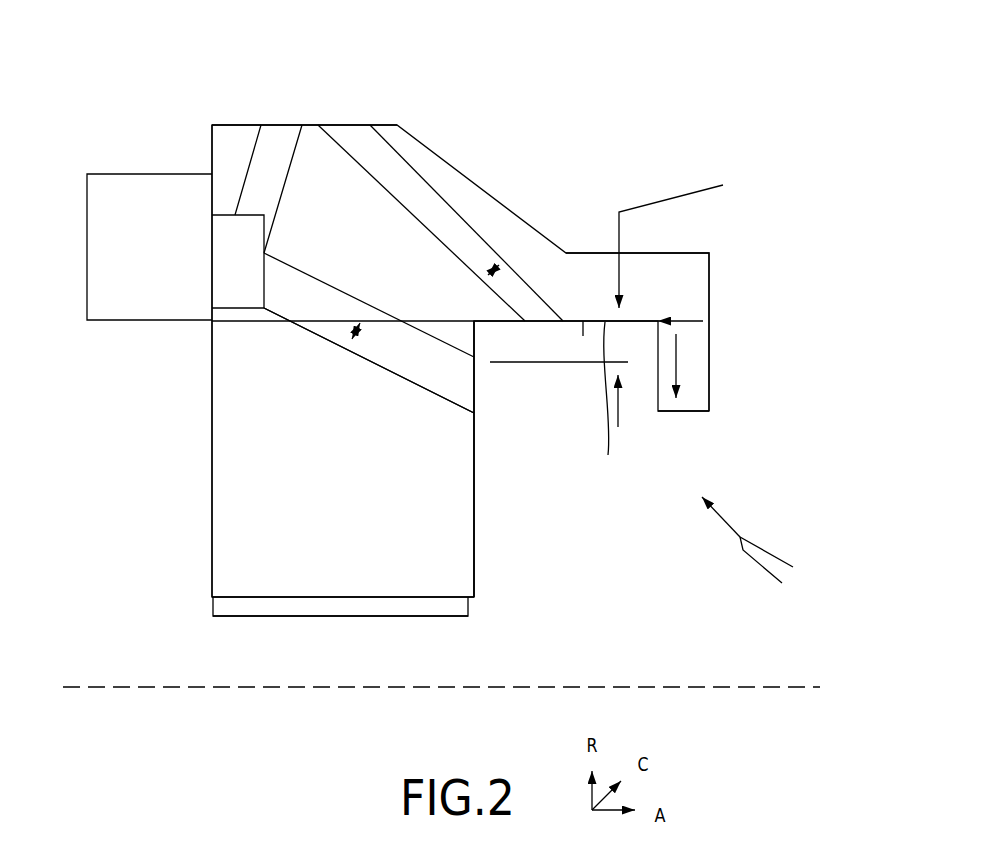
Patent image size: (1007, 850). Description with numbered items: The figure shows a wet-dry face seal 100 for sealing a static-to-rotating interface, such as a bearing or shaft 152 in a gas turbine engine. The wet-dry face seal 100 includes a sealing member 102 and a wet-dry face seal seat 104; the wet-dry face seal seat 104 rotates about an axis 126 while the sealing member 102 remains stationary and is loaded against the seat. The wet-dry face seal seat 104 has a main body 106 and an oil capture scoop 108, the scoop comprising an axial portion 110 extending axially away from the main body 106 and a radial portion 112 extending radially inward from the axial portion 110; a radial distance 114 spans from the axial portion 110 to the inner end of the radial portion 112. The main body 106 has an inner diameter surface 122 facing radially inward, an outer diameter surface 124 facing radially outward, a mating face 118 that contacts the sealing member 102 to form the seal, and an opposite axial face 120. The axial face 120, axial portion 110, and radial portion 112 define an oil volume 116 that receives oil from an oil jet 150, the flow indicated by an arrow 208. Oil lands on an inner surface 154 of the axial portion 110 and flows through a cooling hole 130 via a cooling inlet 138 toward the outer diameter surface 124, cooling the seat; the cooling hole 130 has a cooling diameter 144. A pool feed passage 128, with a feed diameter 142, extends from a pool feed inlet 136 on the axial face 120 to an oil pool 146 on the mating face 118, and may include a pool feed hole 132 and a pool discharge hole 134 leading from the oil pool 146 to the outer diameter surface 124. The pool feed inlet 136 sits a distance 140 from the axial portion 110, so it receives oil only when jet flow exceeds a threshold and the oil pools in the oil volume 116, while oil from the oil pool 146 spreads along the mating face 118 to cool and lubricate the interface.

The wet-dry face seal 100 is at (708, 126).
The sealing member 102 is at (119, 224).
The wet-dry face seal seat 104 is at (322, 112).
The main body 106 is at (326, 509).
The oil capture scoop 108 is at (592, 240).
The axial portion 110 is at (582, 334).
The radial portion 112 is at (709, 372).
The radial distance 114 is at (677, 380).
The oil volume 116 is at (496, 403).
The mating face 118 is at (211, 494).
The axial face 120 is at (474, 485).
The inner diameter surface 122 is at (327, 597).
The outer diameter surface 124 is at (243, 112).
The axis 126 is at (768, 687).
The pool feed passage 128 is at (377, 380).
The cooling hole 130 is at (432, 252).
The pool feed hole 132 is at (345, 292).
The pool discharge hole 134 is at (290, 166).
The pool feed inlet 136 is at (473, 400).
The cooling inlet 138 is at (532, 323).
The distance 140 is at (618, 427).
The feed diameter 142 is at (352, 335).
The cooling diameter 144 is at (506, 265).
The oil pool 146 is at (225, 245).
The oil jet 150 is at (775, 545).
The shaft 152 is at (403, 616).
The inner surface 154 is at (602, 403).
The arrow 208 is at (725, 512).